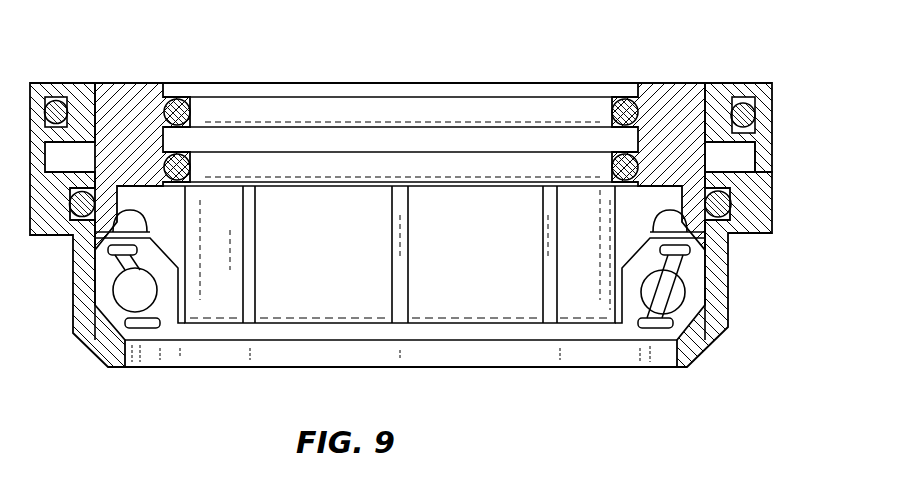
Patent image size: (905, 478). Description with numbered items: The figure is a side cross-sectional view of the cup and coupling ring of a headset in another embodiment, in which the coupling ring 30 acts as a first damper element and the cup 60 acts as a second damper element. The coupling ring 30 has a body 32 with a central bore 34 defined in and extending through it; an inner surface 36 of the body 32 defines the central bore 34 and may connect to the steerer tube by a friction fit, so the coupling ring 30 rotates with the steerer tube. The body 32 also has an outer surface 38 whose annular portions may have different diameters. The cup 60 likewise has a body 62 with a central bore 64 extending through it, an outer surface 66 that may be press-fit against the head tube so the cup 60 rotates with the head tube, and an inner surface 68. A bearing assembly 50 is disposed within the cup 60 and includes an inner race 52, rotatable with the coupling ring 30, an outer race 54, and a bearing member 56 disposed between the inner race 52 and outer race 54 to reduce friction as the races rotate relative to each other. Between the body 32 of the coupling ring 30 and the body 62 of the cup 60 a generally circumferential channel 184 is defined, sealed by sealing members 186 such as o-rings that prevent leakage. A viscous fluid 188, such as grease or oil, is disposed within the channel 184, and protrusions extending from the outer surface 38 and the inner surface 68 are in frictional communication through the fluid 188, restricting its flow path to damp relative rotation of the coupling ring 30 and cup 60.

The coupling ring 30 is at (680, 82).
The body 32 is at (693, 90).
The central bore 34 is at (572, 82).
The inner surface 36 is at (612, 96).
The outer surface 38 is at (705, 140).
The bearing assembly 50 is at (657, 330).
The inner race 52 is at (632, 330).
The outer race 54 is at (693, 337).
The bearing member 56 is at (690, 315).
The cup 60 is at (780, 164).
The body 62 is at (767, 212).
The central bore 64 is at (708, 258).
The outer surface 66 is at (773, 125).
The inner surface 68 is at (758, 158).
The channel 184 is at (777, 171).
The sealing members 186 is at (750, 108).
The fluid 188 is at (730, 165).